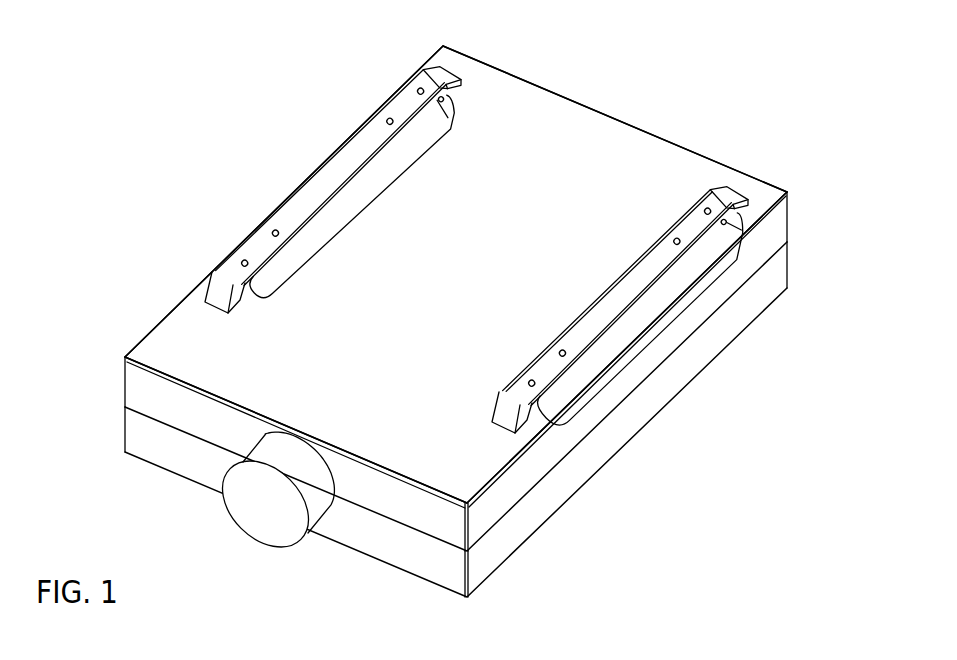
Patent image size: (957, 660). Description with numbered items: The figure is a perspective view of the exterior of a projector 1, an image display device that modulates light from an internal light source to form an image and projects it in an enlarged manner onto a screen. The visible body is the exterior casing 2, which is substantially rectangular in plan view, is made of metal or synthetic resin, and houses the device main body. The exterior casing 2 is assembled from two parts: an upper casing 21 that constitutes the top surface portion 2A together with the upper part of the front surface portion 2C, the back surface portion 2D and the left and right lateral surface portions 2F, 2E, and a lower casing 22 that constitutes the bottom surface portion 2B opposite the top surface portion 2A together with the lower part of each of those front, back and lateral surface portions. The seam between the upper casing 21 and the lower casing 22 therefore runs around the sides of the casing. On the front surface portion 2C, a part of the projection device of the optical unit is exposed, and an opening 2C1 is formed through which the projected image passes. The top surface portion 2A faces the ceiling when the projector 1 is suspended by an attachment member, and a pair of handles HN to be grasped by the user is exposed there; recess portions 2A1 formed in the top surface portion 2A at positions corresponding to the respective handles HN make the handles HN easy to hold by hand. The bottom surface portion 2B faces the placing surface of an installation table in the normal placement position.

The projector 1 is at (216, 121).
The exterior casing 2 is at (832, 211).
The upper casing 21 is at (777, 230).
The lower casing 22 is at (777, 270).
The top surface portion 2A is at (556, 108).
The recess portion 2A1 is at (352, 205).
The bottom surface portion 2B is at (559, 530).
The front surface portion 2C is at (370, 547).
The opening 2C1 is at (327, 505).
The back surface portion 2D is at (684, 130).
The right lateral surface portion 2E is at (613, 438).
The left lateral surface portion 2F is at (225, 232).
The handle HN is at (342, 163).